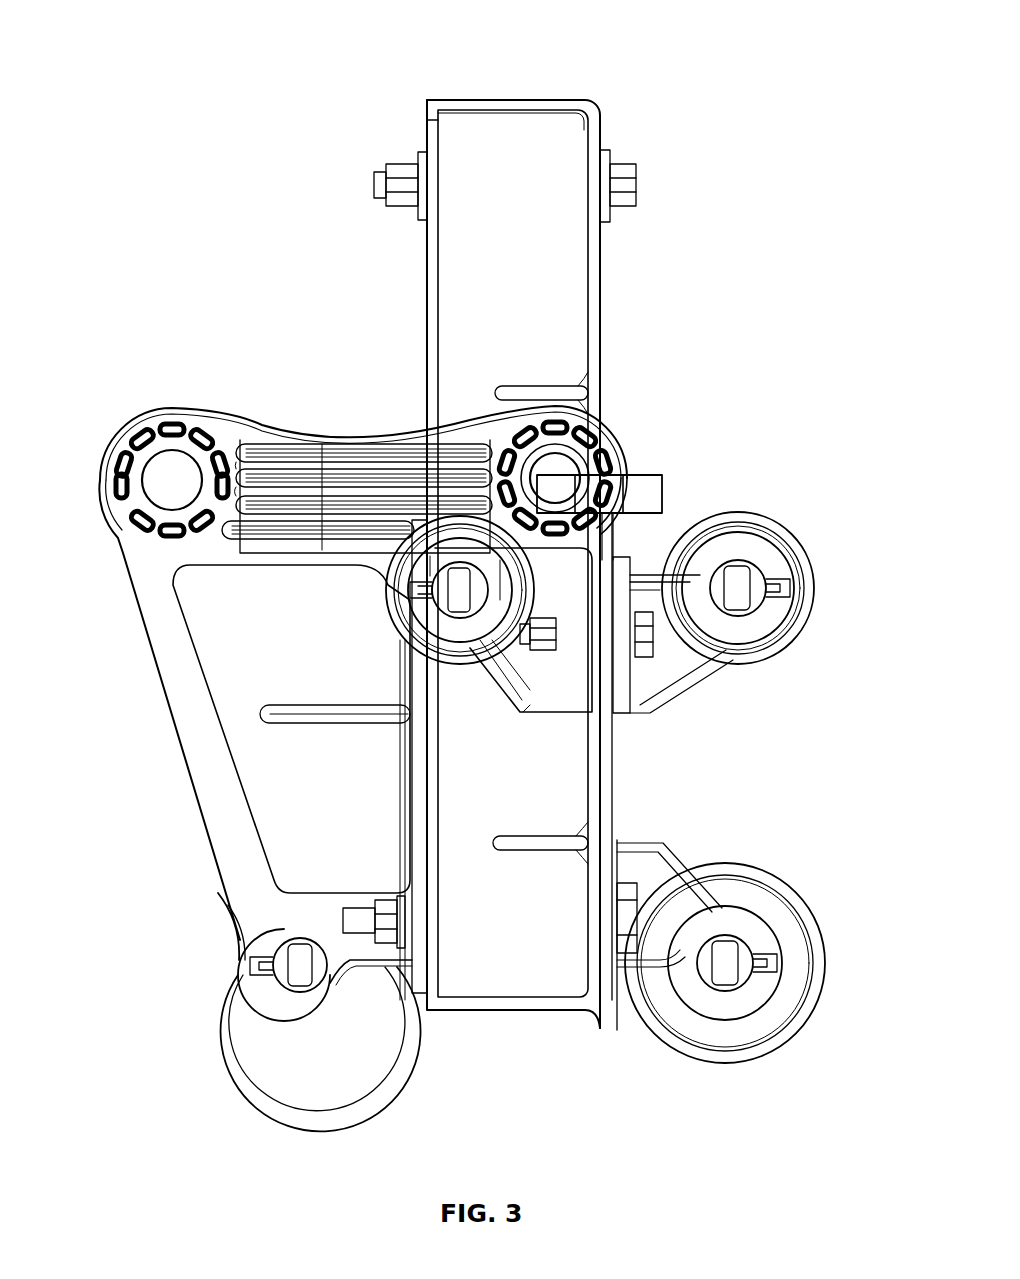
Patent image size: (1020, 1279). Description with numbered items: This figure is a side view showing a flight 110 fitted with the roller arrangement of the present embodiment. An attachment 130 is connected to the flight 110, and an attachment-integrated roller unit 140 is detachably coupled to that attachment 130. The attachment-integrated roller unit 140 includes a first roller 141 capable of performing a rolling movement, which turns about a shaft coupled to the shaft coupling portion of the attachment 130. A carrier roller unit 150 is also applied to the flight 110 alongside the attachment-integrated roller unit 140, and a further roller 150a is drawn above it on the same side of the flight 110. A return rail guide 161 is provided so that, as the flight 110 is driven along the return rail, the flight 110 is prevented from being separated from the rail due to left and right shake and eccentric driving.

The flight 110 is at (447, 98).
The attachment 130 is at (127, 420).
The attachment-integrated roller unit 140 is at (195, 1010).
The first roller 141 is at (284, 1053).
The carrier roller unit 150 is at (800, 1048).
The upper roller 150a is at (797, 658).
The return rail guide 161 is at (652, 487).